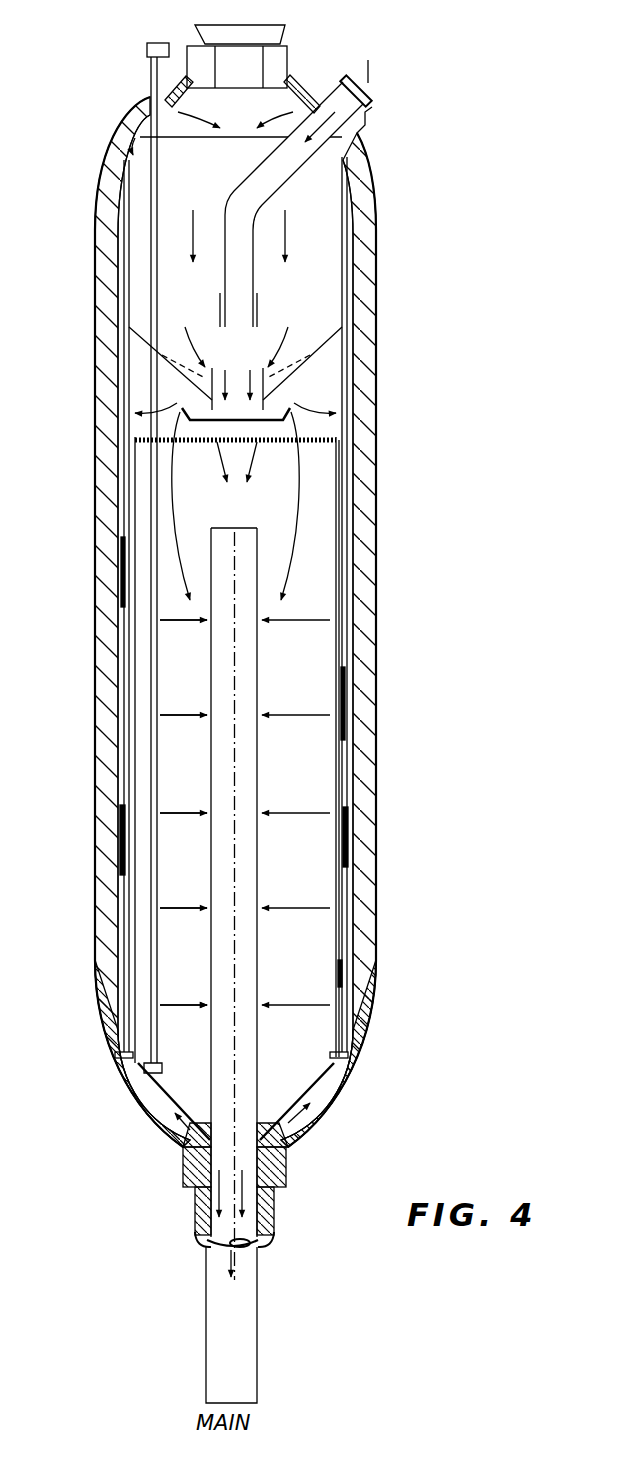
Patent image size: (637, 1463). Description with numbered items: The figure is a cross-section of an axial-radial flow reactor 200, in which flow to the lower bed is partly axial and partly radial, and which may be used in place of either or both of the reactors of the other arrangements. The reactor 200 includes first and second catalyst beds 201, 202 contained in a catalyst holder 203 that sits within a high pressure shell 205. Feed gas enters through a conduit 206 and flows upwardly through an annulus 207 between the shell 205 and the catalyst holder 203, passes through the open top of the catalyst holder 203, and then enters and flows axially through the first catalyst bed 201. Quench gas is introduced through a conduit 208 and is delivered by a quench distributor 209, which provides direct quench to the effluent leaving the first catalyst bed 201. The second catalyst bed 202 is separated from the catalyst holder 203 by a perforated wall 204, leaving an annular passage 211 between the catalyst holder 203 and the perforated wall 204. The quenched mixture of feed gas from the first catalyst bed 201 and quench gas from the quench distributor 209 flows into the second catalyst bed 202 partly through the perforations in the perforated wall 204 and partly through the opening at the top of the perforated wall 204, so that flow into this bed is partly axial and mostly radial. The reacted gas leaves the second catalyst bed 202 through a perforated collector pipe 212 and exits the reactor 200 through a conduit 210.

The reactor 200 is at (378, 148).
The first catalyst bed 201 is at (320, 291).
The second catalyst bed 202 is at (330, 766).
The catalyst holder 203 is at (345, 318).
The perforated wall 204 is at (333, 641).
The high pressure shell 205 is at (108, 412).
The conduit 206 is at (258, 1300).
The annulus 207 is at (345, 820).
The conduit 208 is at (370, 102).
The quench distributor 209 is at (350, 394).
The conduit 210 is at (198, 1200).
The annular passage 211 is at (345, 700).
The perforated collector pipe 212 is at (263, 963).